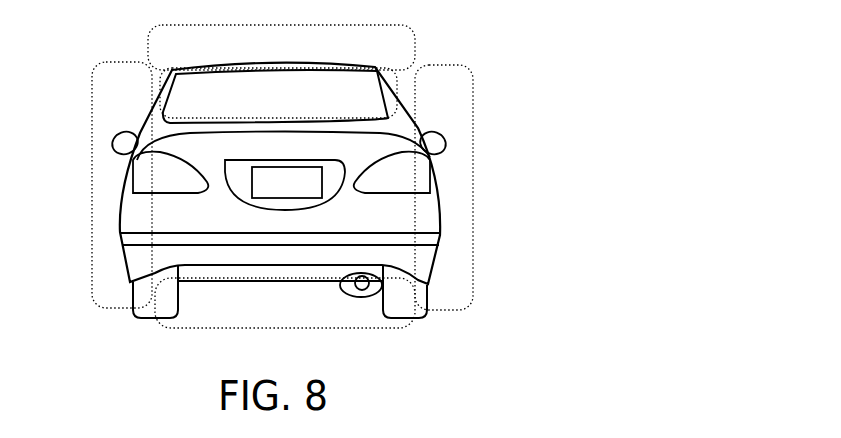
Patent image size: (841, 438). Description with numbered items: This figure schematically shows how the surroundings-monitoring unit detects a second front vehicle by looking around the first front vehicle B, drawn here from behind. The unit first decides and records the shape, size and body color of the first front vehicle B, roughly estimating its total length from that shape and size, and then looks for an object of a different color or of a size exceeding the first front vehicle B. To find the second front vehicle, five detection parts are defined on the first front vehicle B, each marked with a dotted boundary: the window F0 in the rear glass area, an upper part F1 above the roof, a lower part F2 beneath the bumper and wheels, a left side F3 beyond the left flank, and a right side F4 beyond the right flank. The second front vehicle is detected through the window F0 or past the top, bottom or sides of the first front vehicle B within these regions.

The first front vehicle B is at (182, 210).
The window F0 is at (397, 81).
The upper part F1 is at (415, 41).
The lower part F2 is at (180, 328).
The left side F3 is at (92, 178).
The right side F4 is at (473, 167).